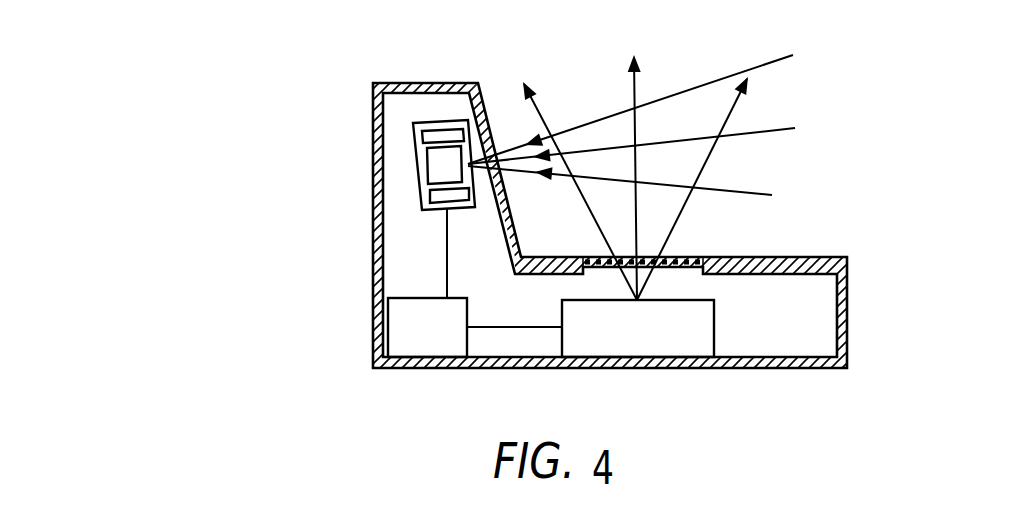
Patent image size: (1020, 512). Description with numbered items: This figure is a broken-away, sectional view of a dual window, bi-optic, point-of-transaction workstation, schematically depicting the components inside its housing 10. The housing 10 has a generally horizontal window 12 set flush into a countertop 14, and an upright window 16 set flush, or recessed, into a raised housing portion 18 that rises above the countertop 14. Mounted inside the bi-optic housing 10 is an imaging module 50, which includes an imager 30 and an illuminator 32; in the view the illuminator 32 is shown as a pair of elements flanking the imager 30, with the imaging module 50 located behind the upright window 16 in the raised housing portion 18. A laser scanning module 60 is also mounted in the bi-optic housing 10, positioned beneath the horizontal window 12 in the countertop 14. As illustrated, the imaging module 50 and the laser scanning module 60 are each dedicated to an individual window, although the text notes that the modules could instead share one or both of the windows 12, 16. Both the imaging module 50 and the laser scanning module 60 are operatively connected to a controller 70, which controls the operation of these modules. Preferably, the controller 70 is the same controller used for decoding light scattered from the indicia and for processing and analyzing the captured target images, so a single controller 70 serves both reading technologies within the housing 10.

The housing 10 is at (826, 174).
The horizontal window 12 is at (683, 255).
The countertop 14 is at (802, 255).
The upright window 16 is at (491, 110).
The raised housing portion 18 is at (432, 82).
The imager 30 is at (427, 165).
The illuminator 32 is at (263, 332).
The imaging module 50 is at (414, 150).
The laser scanning module 60 is at (652, 337).
The controller 70 is at (400, 338).